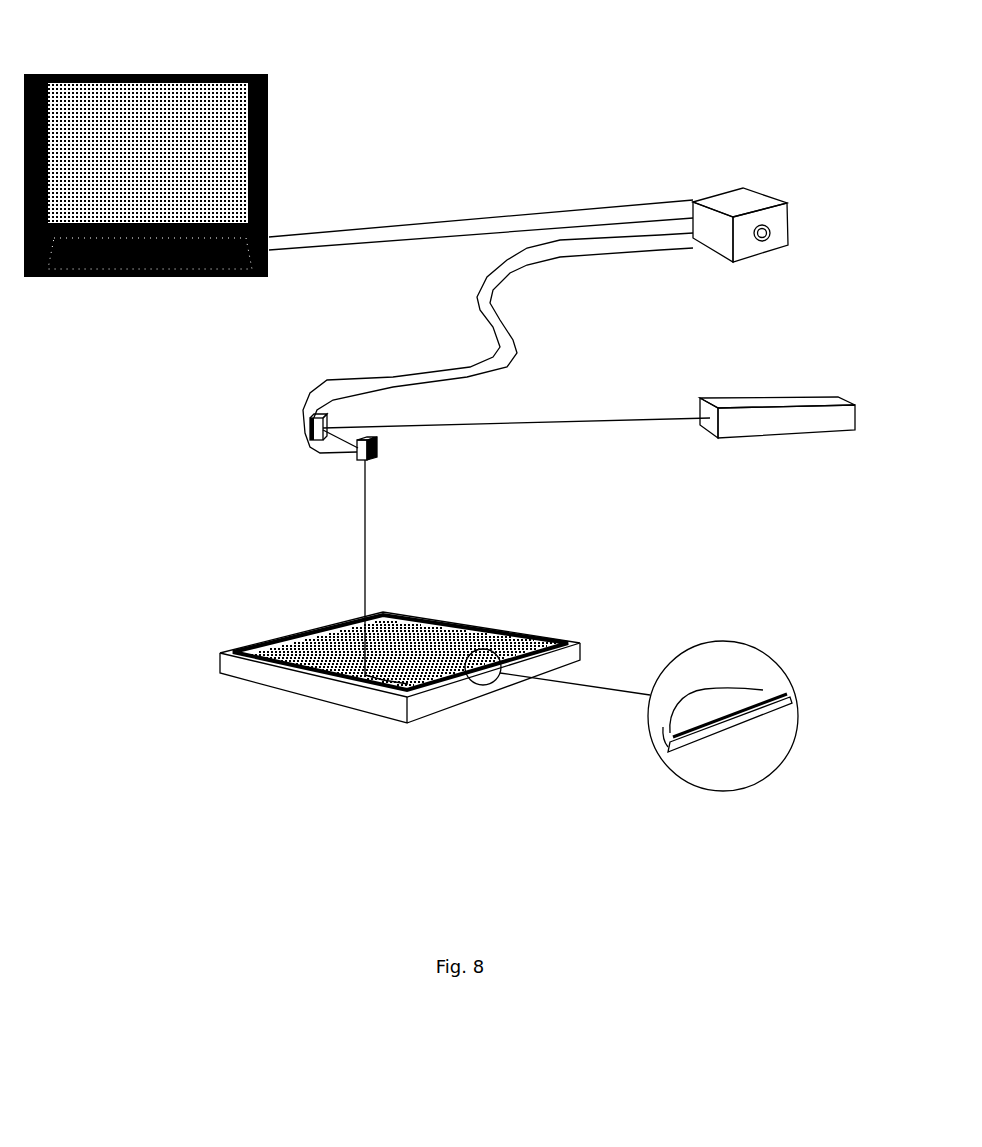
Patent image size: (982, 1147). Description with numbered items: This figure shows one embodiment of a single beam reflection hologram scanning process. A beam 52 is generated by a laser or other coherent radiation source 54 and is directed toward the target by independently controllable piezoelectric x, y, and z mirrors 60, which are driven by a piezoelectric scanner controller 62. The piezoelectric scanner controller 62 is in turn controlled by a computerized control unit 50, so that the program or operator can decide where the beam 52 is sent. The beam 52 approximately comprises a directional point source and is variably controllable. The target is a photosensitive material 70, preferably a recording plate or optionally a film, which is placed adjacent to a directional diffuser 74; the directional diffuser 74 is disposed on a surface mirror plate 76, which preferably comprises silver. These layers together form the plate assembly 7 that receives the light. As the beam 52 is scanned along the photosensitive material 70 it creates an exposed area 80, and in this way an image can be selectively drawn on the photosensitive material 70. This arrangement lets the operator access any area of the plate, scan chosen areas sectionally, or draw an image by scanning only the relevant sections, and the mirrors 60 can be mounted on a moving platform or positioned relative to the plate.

The imaging plate 7 is at (215, 656).
The computerized control unit 50 is at (272, 157).
The beam 52 is at (380, 505).
The laser or other coherent radiation source 54 is at (753, 393).
The piezoelectric x, y, and z mirrors 60 is at (353, 462).
The piezoelectric scanner controller 62 is at (747, 188).
The photosensitive material 70 is at (626, 635).
The directional diffuser 74 is at (777, 690).
The surface mirror plate 76 is at (780, 710).
The exposed area 80 is at (388, 680).